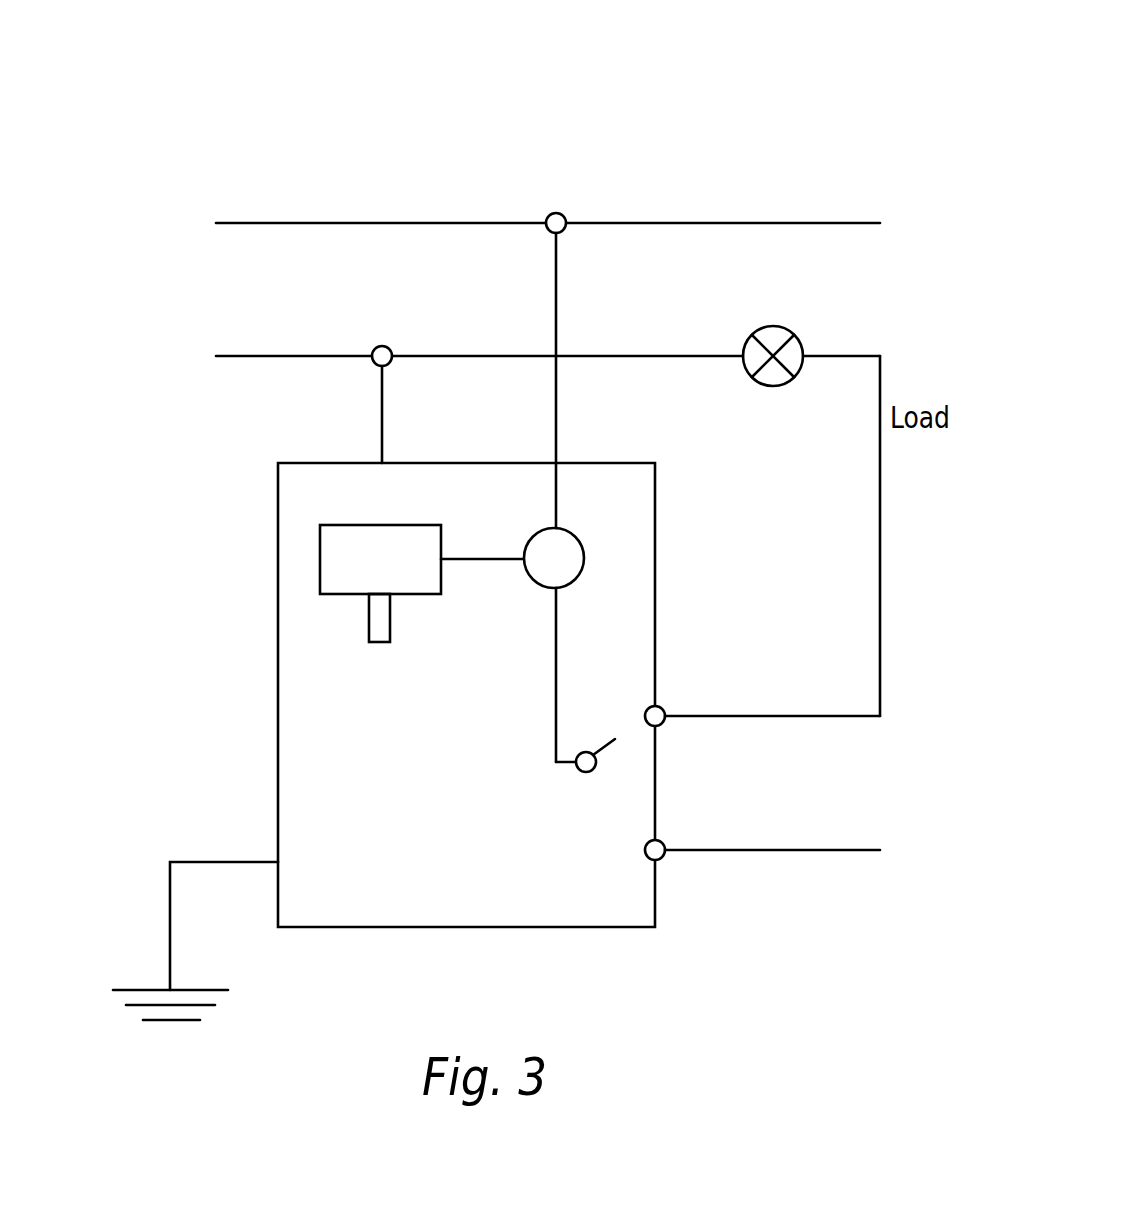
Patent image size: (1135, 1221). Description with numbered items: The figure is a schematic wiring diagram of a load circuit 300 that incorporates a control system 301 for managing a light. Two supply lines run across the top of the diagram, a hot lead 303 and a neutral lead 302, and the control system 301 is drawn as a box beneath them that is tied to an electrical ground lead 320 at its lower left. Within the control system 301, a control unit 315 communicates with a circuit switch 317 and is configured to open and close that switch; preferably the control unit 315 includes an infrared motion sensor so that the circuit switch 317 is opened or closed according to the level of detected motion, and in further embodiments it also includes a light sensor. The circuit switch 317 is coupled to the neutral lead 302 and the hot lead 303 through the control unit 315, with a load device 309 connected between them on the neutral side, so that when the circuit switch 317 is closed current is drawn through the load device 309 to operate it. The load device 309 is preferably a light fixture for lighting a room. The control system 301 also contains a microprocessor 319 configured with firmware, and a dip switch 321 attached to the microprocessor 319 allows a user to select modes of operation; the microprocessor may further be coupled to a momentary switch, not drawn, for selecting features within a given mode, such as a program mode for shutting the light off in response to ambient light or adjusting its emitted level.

The load circuit 300 is at (160, 102).
The control system 301 is at (153, 455).
The neutral lead 302 is at (298, 353).
The hot lead 303 is at (718, 222).
The load device 309 is at (783, 328).
The control unit 315 is at (585, 560).
The circuit switch 317 is at (588, 772).
The microprocessor 319 is at (320, 563).
The electrical ground lead 320 is at (182, 860).
The dip switch 321 is at (377, 645).